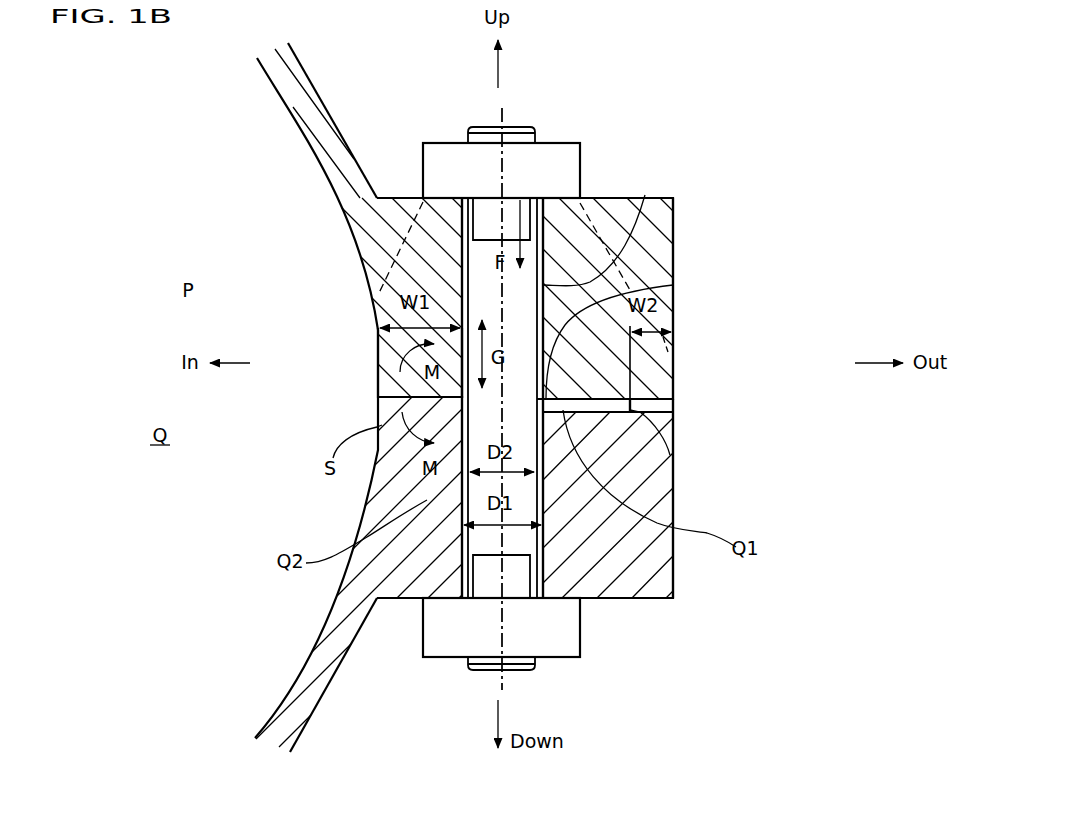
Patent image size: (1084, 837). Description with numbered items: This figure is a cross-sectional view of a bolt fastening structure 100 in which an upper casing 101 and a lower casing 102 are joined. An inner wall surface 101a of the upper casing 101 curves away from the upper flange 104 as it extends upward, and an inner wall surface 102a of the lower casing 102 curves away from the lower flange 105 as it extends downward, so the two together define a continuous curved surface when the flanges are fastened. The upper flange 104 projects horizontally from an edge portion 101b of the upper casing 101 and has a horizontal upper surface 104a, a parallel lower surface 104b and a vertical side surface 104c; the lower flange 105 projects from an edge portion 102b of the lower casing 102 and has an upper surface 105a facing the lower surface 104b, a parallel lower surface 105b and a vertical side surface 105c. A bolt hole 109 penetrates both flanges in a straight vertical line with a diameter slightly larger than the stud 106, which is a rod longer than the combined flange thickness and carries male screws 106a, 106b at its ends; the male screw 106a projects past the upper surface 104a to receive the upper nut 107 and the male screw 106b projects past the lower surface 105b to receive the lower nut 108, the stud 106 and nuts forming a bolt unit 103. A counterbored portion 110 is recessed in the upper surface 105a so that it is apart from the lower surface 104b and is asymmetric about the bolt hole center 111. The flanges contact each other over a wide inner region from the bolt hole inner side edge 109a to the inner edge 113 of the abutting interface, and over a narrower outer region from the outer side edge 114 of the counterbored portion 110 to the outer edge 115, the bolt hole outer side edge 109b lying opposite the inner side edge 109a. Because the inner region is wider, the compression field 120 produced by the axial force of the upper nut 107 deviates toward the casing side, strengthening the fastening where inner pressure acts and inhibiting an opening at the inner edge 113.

The bolt fastening structure 100 is at (203, 108).
The upper casing 101 is at (298, 62).
The inner wall surface 101a is at (300, 128).
The edge portion 101b is at (372, 295).
The lower casing 102 is at (327, 683).
The inner wall surface 102a is at (317, 647).
The edge portion 102b is at (388, 500).
The bolt unit 103 is at (580, 110).
The upper flange 104 is at (658, 253).
The upper surface 104a is at (620, 197).
The lower surface 104b is at (628, 410).
The side surface 104c is at (673, 302).
The lower flange 105 is at (657, 548).
The upper surface 105a is at (378, 396).
The lower surface 105b is at (662, 600).
The side surface 105c is at (674, 495).
The stud 106 is at (675, 198).
The male screw 106a is at (537, 130).
The male screw 106b is at (540, 668).
The upper nut 107 is at (555, 170).
The lower nut 108 is at (557, 628).
The bolt hole 109 is at (460, 268).
The bolt hole inner side edge 109a is at (395, 358).
The bolt hole outer side edge 109b is at (673, 285).
The counterbored portion 110 is at (670, 455).
The bolt hole center 111 is at (503, 115).
The inner edge of the abutting interface 113 is at (378, 398).
The outer side edge of the counterbored portion 114 is at (673, 388).
The outer edge of the abutting interface 115 is at (673, 399).
The compression field 120 is at (645, 195).